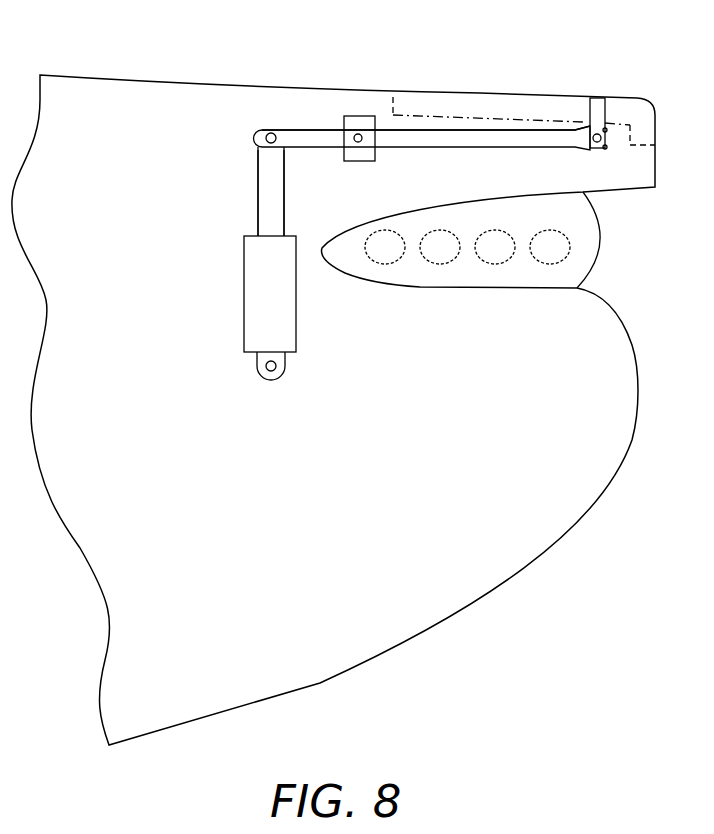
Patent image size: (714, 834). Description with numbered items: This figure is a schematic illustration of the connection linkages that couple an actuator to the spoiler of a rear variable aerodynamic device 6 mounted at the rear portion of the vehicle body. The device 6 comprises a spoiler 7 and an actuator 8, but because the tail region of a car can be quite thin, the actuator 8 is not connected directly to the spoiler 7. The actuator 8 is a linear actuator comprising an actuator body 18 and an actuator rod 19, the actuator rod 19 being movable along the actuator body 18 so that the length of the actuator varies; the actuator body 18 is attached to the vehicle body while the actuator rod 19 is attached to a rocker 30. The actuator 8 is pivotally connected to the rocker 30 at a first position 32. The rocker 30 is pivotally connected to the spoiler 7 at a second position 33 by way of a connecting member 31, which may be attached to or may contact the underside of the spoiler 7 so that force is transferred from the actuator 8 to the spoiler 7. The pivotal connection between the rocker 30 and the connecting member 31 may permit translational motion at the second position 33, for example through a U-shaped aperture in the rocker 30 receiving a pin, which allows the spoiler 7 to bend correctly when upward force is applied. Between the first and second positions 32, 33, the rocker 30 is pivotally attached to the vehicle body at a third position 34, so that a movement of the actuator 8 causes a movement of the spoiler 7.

The rear variable aerodynamic device 6 is at (317, 62).
The spoiler 7 is at (497, 98).
The actuator 8 is at (224, 267).
The actuator body 18 is at (254, 328).
The actuator rod 19 is at (262, 186).
The rocker 30 is at (313, 142).
The connecting member 31 is at (598, 106).
The first position 32 is at (276, 128).
The second position 33 is at (597, 143).
The third position 34 is at (360, 134).